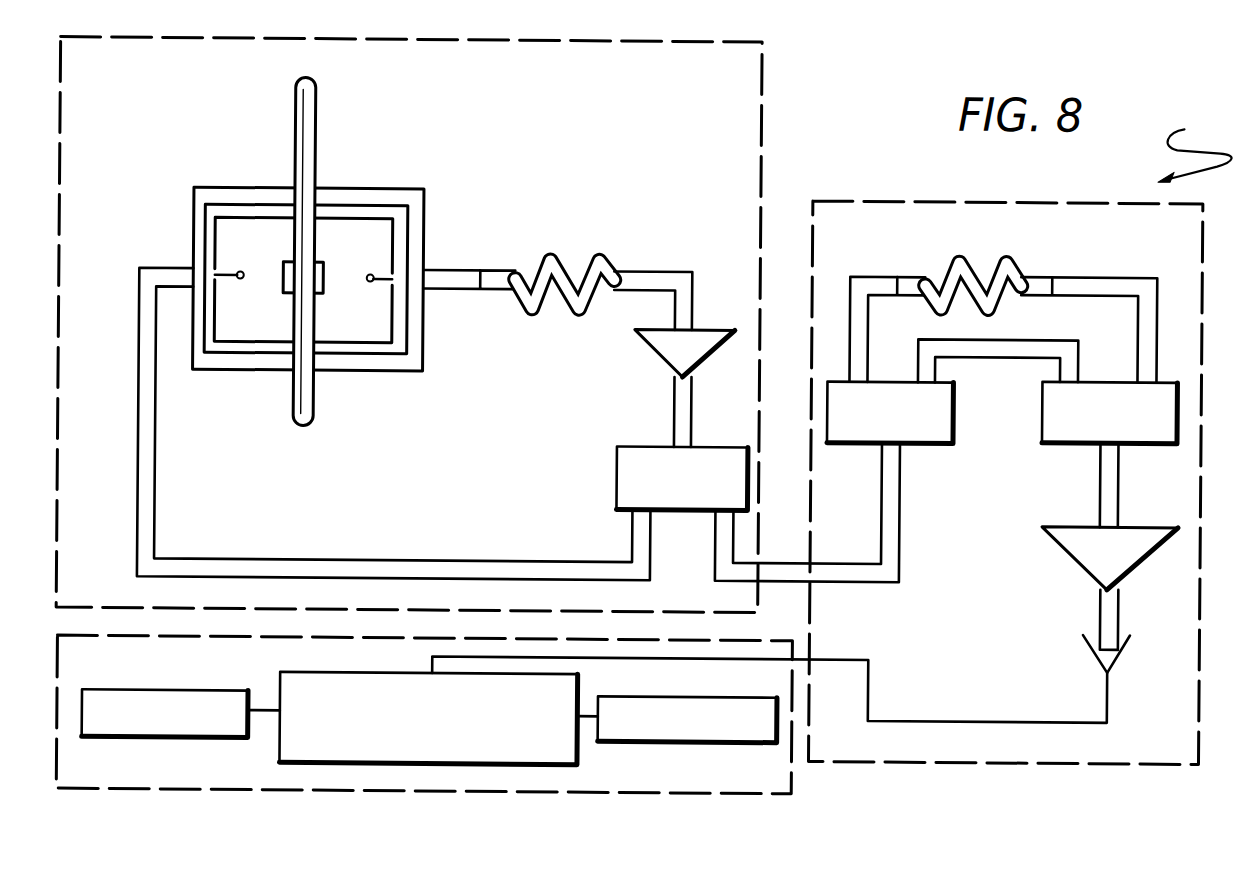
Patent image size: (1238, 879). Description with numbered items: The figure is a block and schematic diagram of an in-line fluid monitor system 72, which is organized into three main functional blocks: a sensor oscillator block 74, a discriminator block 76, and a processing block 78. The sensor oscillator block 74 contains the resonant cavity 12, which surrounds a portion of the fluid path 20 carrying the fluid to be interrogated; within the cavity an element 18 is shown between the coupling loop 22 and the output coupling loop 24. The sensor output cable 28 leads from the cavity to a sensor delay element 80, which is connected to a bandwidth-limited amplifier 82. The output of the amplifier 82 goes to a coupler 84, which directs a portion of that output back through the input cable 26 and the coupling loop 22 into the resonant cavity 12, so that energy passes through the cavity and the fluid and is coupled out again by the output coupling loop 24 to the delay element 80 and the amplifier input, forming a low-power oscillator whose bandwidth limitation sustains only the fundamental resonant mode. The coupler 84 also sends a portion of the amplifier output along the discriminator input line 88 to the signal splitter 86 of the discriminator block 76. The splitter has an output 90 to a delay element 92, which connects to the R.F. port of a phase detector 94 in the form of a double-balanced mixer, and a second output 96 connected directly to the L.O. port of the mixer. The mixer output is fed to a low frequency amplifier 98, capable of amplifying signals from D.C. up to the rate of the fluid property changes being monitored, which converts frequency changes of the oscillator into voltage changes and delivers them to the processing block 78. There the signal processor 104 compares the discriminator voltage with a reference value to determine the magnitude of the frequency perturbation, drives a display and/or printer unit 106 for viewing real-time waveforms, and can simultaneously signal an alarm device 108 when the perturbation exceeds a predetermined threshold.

The resonant cavity 12 is at (262, 322).
The sensing element 18 is at (325, 274).
The fluid path 20 is at (314, 130).
The coupling loop 22 is at (240, 275).
The output coupling loop 24 is at (366, 283).
The input cable 26 is at (154, 272).
The sensor output cable 28 is at (447, 273).
The in-line fluid monitor system 72 is at (1195, 146).
The sensor oscillator block 74 is at (759, 101).
The discriminator block 76 is at (884, 200).
The processing block 78 is at (760, 793).
The sensor delay element 80 is at (549, 258).
The bandwidth-limited amplifier 82 is at (650, 351).
The coupler 84 is at (647, 446).
The signal splitter 86 is at (953, 405).
The discriminator input line 88 is at (900, 499).
The output 90 is at (838, 380).
The delay element 92 is at (957, 257).
The phase detector 94 is at (1165, 440).
The output 96 is at (892, 380).
The low frequency amplifier 98 is at (1060, 551).
The signal processor 104 is at (282, 745).
The display and/or printer unit 106 is at (122, 693).
The alarm device 108 is at (652, 742).